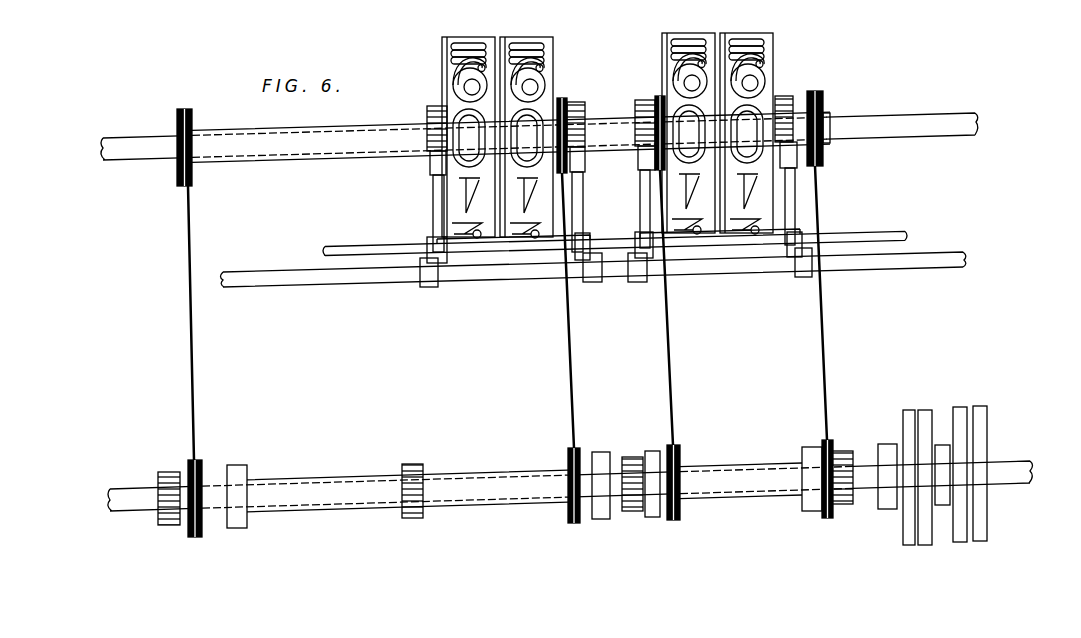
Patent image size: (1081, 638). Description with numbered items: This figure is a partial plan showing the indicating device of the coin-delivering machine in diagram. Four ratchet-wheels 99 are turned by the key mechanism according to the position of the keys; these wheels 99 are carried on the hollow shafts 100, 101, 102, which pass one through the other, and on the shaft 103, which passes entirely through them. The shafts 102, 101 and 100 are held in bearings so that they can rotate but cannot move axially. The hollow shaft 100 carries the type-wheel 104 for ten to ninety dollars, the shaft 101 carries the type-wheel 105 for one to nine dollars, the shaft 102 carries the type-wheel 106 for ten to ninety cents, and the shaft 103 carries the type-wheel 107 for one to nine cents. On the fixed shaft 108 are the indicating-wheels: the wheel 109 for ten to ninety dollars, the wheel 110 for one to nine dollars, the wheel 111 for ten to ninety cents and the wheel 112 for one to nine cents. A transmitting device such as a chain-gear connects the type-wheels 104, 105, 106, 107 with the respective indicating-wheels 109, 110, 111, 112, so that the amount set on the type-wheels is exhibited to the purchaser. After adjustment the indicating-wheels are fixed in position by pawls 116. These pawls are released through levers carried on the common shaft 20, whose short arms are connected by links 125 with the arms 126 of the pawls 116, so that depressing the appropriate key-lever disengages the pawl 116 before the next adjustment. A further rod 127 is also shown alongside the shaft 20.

The common shaft 20 is at (352, 283).
The ratchet-wheel 99 is at (165, 481).
The hollow shaft 100 is at (862, 468).
The hollow shaft 101 is at (725, 470).
The hollow shaft 102 is at (311, 478).
The shaft 103 is at (208, 490).
The type-wheel 104 is at (910, 536).
The type-wheel 105 is at (928, 536).
The type-wheel 106 is at (965, 540).
The type-wheel 107 is at (990, 541).
The fixed shaft 108 is at (133, 150).
The indicating-wheel 109 is at (773, 45).
The indicating-wheel 110 is at (665, 43).
The indicating-wheel 111 is at (553, 42).
The indicating-wheel 112 is at (448, 52).
The pawl 116 is at (440, 192).
The link 125 is at (440, 281).
The arm of pawl 126 is at (447, 258).
The rod 127 is at (374, 241).